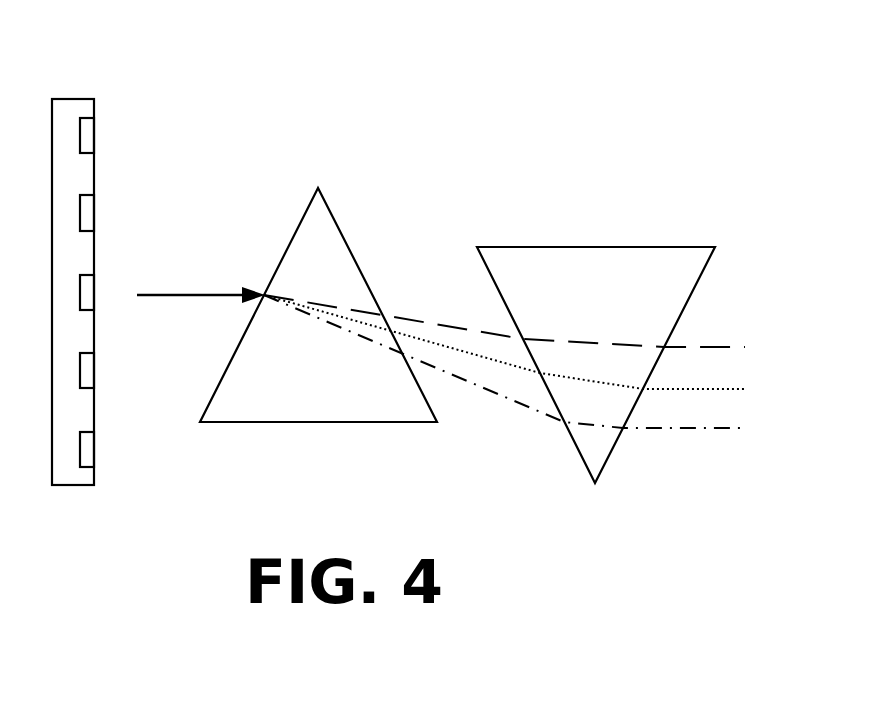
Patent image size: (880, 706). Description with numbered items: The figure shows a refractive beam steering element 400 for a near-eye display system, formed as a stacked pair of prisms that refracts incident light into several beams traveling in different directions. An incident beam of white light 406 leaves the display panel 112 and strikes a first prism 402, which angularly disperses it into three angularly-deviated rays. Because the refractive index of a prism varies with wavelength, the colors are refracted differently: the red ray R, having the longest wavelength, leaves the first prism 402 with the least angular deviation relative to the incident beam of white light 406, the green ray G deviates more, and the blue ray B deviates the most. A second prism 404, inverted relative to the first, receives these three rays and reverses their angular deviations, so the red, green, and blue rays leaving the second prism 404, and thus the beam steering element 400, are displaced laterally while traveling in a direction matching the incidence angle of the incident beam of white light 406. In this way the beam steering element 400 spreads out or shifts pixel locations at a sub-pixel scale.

The beam steering element 400 is at (383, 44).
The display panel 112 is at (72, 99).
The first prism 402 is at (318, 188).
The second prism 404 is at (594, 247).
The incident beam of white light 406 is at (181, 283).